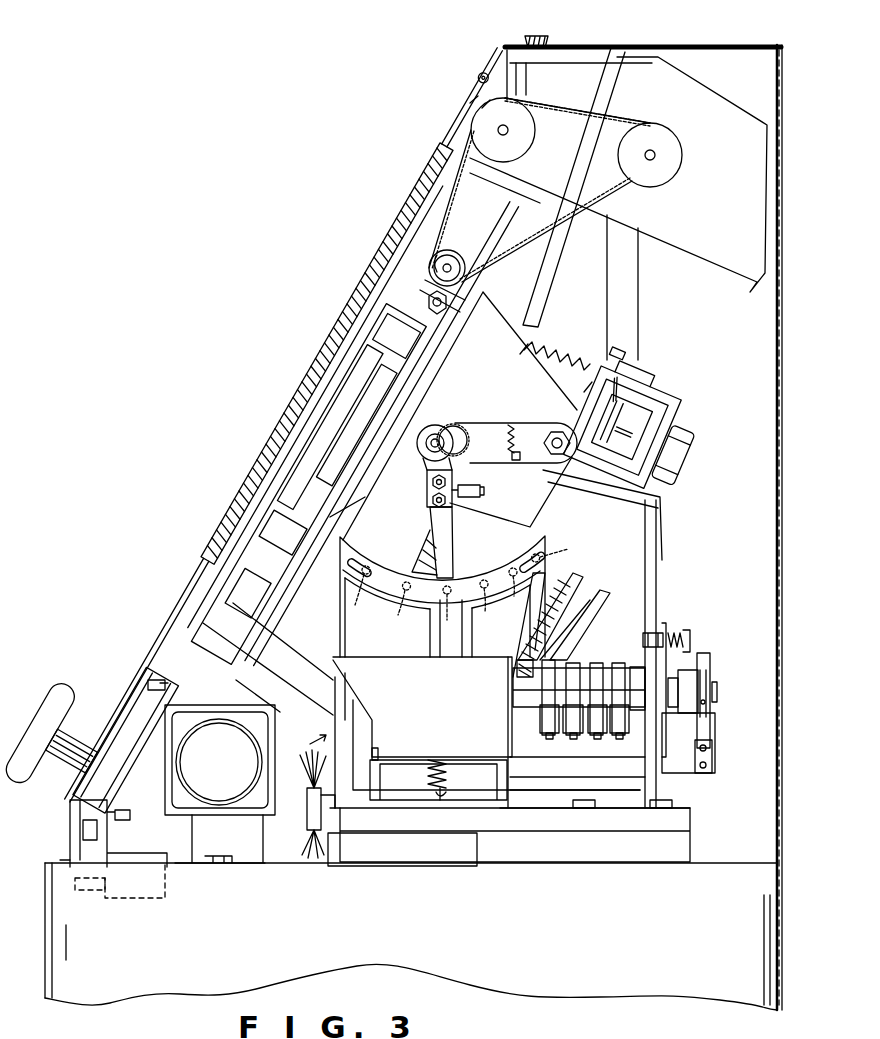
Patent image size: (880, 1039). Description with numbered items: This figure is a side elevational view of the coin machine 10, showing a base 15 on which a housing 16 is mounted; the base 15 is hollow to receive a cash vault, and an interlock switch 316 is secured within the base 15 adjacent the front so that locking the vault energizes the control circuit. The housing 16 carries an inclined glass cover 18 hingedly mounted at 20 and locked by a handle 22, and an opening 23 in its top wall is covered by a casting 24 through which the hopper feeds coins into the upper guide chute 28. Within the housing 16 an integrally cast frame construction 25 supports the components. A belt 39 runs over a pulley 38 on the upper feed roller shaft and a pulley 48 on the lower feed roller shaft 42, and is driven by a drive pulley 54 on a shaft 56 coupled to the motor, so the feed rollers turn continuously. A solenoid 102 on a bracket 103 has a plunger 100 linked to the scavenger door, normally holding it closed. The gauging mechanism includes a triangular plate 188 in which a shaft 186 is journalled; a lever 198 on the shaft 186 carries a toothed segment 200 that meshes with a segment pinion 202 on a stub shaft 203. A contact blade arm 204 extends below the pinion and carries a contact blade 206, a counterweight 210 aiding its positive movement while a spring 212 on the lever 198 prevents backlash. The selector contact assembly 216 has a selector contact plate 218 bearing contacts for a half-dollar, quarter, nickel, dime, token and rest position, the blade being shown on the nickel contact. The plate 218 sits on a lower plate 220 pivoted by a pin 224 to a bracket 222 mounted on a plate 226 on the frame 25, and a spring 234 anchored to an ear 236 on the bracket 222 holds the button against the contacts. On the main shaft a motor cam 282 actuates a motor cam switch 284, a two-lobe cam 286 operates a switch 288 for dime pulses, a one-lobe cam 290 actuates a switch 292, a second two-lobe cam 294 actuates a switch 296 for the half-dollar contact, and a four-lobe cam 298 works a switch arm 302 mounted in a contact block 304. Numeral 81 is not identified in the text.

The coin machine 10 is at (404, 142).
The base 15 is at (120, 982).
The housing 16 is at (775, 310).
The inclined glass cover 18 is at (325, 348).
The hinge mounting 20 is at (490, 70).
The handle 22 is at (62, 692).
The opening 23 is at (602, 48).
The casting 24 is at (534, 37).
The frame construction 25 is at (688, 820).
The upper guide chute 28 is at (486, 72).
The pulley 38 is at (476, 118).
The belt 39 is at (528, 250).
The shaft 42 is at (440, 254).
The pulley 48 is at (468, 306).
The drive pulley 54 is at (683, 160).
The shaft 56 is at (656, 154).
The drive pulley 81 is at (507, 133).
The plunger 100 is at (675, 437).
The solenoid 102 is at (640, 398).
The bracket 103 is at (666, 514).
The shaft 186 is at (536, 444).
The plate 188 is at (495, 315).
The lever 198 is at (506, 422).
The segment 200 is at (466, 424).
The segment pinion 202 is at (422, 458).
The stub shaft 203 is at (434, 432).
The contact blade arm 204 is at (427, 492).
The contact blade 206 is at (448, 541).
The counterweight 210 is at (480, 492).
The spring 212 is at (500, 426).
The selector contact assembly 216 is at (250, 784).
The selector contact plate 218 is at (340, 632).
The lower plate 220 is at (480, 742).
The bracket 222 is at (368, 801).
The pin 224 is at (375, 748).
The plate 226 is at (546, 812).
The spring 234 is at (462, 790).
The ear 236 is at (440, 798).
The motor cam 282 is at (548, 690).
The motor cam switch 284 is at (550, 737).
The two-lobe cam 286 is at (583, 623).
The switch 288 is at (573, 740).
The one-lobe cam 290 is at (577, 660).
The switch 292 is at (598, 740).
The second two-lobe cam 294 is at (600, 664).
The switch 296 is at (618, 740).
The four-lobe cam 298 is at (703, 655).
The switch arm 302 is at (706, 724).
The contact block 304 is at (716, 745).
The interlock switch 316 is at (138, 893).